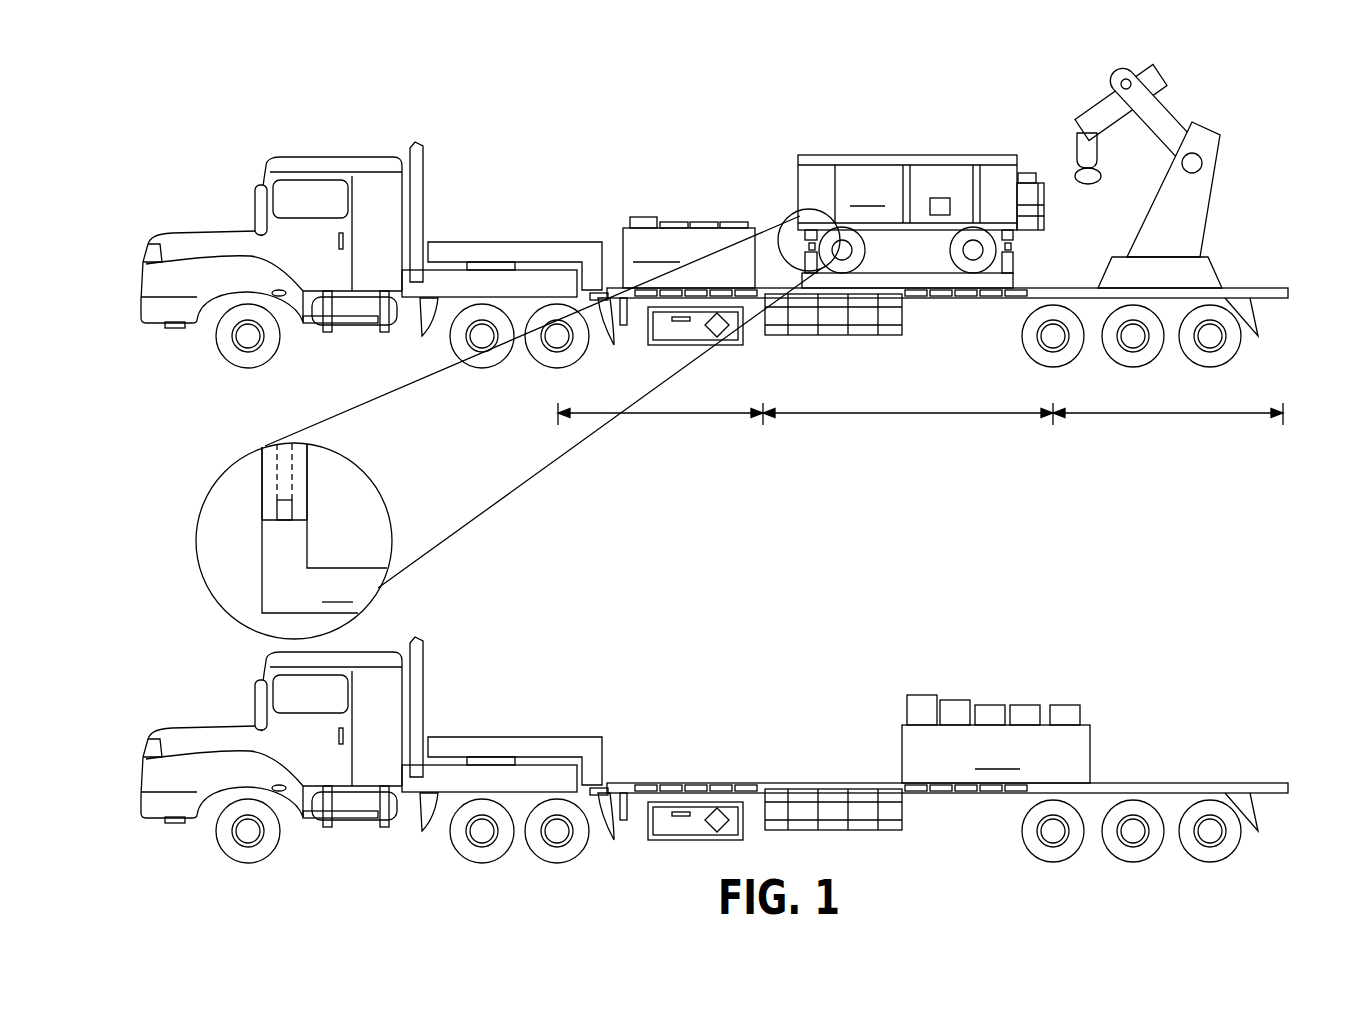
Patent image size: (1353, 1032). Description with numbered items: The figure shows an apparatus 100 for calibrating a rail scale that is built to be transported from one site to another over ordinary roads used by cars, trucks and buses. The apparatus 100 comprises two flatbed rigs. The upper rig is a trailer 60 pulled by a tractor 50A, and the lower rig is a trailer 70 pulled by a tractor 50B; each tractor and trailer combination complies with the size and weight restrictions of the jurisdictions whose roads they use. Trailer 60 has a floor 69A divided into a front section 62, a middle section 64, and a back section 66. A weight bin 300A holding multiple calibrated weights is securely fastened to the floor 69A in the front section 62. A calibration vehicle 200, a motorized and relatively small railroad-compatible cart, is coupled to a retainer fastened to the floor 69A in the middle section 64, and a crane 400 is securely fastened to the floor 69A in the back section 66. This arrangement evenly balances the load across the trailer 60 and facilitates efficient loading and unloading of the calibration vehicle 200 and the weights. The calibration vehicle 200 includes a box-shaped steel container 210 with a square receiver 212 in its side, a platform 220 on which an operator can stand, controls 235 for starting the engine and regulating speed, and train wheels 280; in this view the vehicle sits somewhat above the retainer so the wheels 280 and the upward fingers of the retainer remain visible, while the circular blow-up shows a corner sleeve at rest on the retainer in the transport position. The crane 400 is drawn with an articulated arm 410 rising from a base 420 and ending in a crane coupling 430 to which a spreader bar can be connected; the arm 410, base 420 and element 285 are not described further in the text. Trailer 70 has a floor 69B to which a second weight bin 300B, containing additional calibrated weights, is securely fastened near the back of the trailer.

The tractor 50A is at (298, 142).
The tractor 50B is at (390, 635).
The trailer 60 is at (713, 122).
The front section 62 is at (660, 424).
The middle section 64 is at (908, 424).
The back section 66 is at (1168, 424).
The floor 69A is at (1268, 288).
The floor 69B is at (1258, 783).
The trailer 70 is at (812, 657).
The apparatus 100 is at (868, 565).
The calibration vehicle 200 is at (929, 221).
The container 210 is at (907, 192).
The receiver 212 is at (940, 198).
The platform 220 is at (1046, 221).
The controls 235 is at (1028, 172).
The train wheel 280 is at (958, 265).
The post wall 285 is at (300, 508).
The weight bin 300A is at (689, 234).
The weight bin 300B is at (996, 715).
The crane 400 is at (1147, 158).
The crane arm 410 is at (1178, 108).
The crane base 420 is at (1217, 270).
The crane coupling 430 is at (1082, 157).